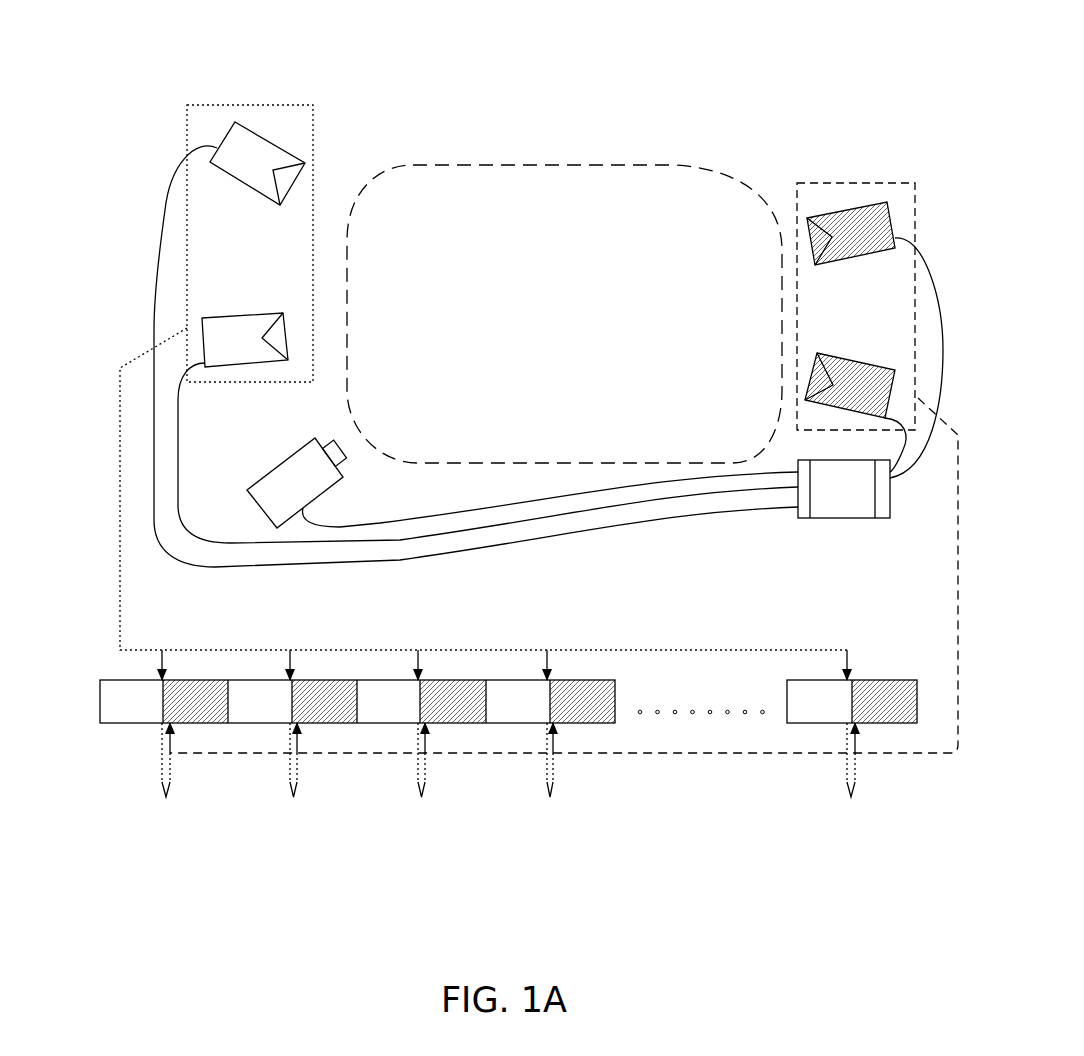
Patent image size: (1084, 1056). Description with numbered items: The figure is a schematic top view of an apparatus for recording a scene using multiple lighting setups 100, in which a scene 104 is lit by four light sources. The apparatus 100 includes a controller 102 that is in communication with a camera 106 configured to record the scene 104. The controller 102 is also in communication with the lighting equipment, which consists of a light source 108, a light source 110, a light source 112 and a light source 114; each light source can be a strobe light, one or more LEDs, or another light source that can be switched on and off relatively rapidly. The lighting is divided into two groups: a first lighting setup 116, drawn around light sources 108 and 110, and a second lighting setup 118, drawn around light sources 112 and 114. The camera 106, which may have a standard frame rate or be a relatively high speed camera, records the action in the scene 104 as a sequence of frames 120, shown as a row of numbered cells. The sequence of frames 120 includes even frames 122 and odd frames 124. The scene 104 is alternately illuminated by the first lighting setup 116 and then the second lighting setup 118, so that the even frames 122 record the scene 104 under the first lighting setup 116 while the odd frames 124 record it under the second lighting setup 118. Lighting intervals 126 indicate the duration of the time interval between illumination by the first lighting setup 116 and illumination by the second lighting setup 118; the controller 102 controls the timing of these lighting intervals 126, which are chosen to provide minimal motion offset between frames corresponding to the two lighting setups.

The apparatus for recording a scene using multiple lighting setups 100 is at (588, 98).
The controller 102 is at (843, 508).
The scene 104 is at (526, 328).
The camera 106 is at (282, 468).
The light source 108 is at (238, 176).
The light source 110 is at (241, 326).
The light source 112 is at (850, 253).
The light source 114 is at (857, 367).
The first lighting setup 116 is at (323, 118).
The second lighting setup 118 is at (785, 182).
The sequence of frames 120 is at (83, 702).
The even frames 122 is at (522, 640).
The odd frames 124 is at (650, 762).
The lighting intervals 126 is at (508, 780).